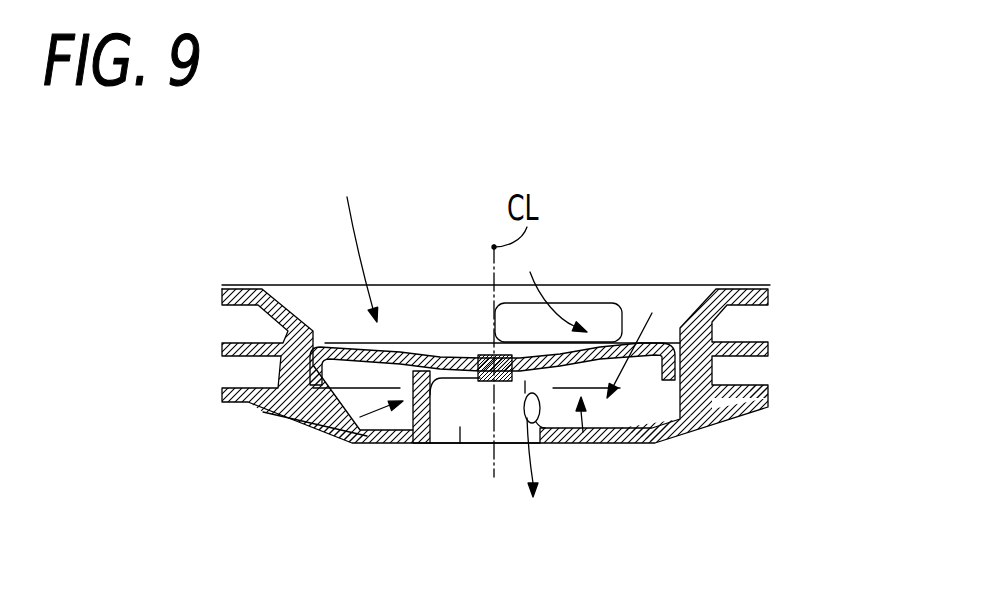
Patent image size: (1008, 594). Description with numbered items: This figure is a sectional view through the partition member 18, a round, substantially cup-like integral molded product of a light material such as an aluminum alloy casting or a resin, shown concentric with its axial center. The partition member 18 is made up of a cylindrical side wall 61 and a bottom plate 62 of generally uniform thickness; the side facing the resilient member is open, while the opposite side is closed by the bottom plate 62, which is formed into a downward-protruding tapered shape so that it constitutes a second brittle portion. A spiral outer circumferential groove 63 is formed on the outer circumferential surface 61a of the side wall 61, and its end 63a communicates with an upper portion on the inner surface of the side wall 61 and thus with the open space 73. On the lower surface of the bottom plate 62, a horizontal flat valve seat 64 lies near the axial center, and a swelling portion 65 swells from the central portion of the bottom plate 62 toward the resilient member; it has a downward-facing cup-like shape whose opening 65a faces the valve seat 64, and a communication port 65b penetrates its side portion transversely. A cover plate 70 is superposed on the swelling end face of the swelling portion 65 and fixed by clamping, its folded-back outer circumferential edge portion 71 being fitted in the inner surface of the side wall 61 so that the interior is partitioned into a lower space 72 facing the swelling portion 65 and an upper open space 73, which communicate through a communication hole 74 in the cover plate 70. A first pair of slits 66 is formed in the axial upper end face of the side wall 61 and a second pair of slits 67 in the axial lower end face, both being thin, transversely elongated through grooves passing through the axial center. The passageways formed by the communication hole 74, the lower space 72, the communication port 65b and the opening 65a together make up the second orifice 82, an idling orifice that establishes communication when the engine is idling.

The partition member 18 is at (794, 162).
The side wall 61 is at (727, 373).
The outer circumferential surface 61a is at (763, 393).
The bottom plate 62 is at (700, 420).
The outer circumferential groove 63 is at (727, 313).
The end of the outer circumferential groove 63a is at (602, 305).
The valve seat 64 is at (393, 447).
The swelling portion 65 is at (337, 435).
The opening of the swelling portion 65a is at (457, 428).
The communication port 65b is at (557, 415).
The first slits 66 is at (243, 288).
The second slits 67 is at (267, 415).
The cover plate 70 is at (399, 333).
The outer circumferential edge portion 71 is at (645, 405).
The lower space 72 is at (352, 370).
The open space 73 is at (355, 240).
The communication hole 74 is at (637, 348).
The second orifice 82 is at (594, 447).